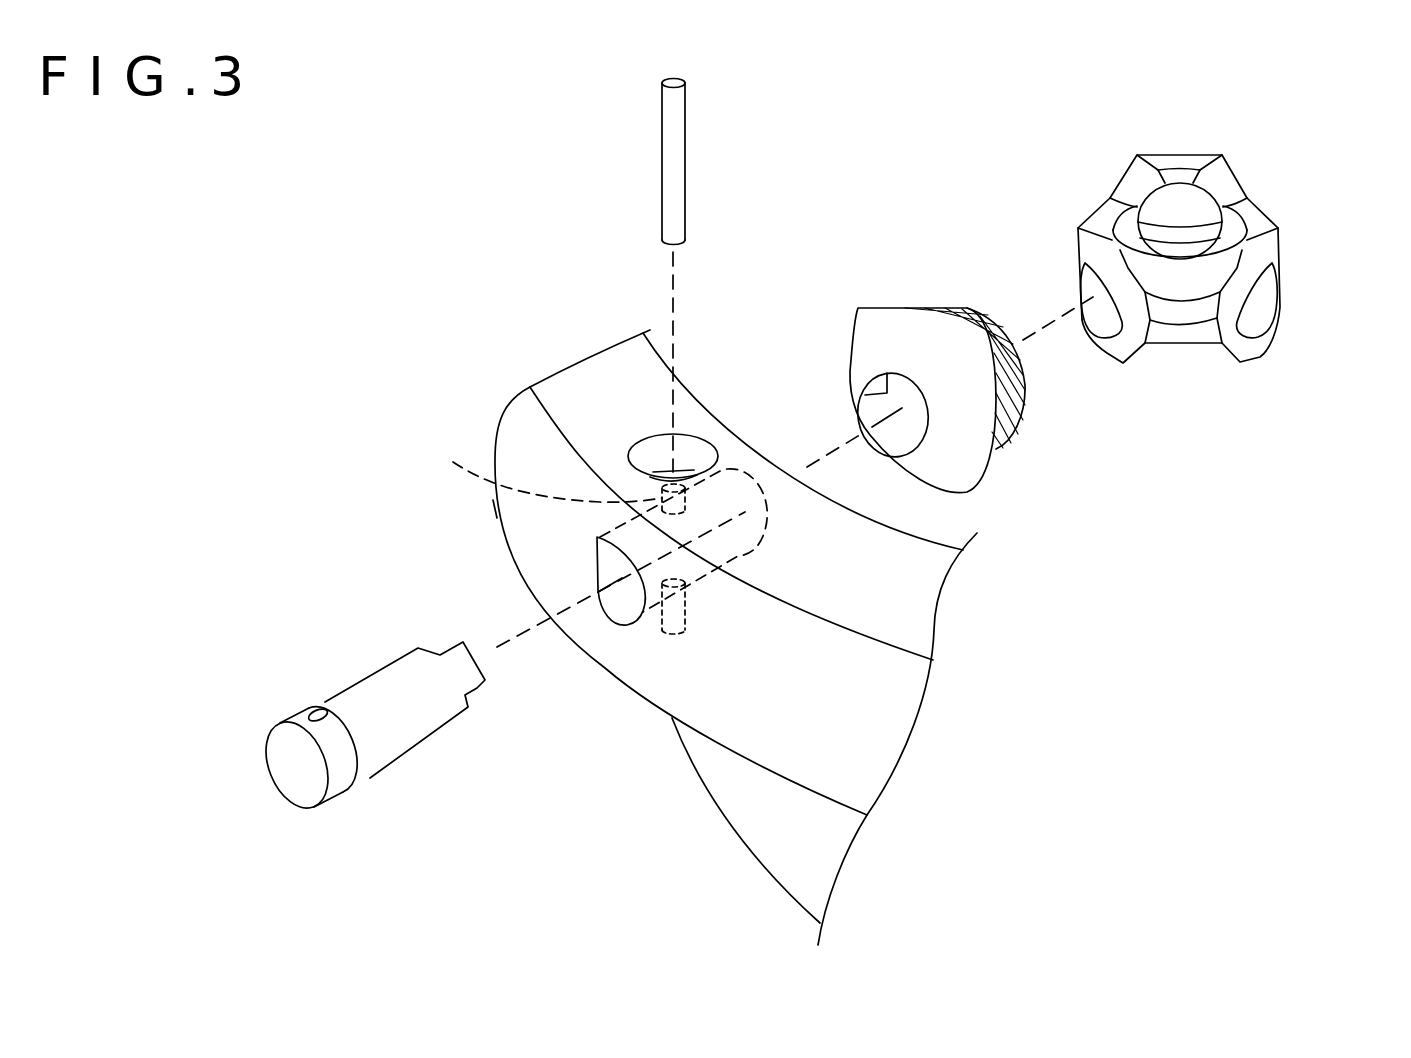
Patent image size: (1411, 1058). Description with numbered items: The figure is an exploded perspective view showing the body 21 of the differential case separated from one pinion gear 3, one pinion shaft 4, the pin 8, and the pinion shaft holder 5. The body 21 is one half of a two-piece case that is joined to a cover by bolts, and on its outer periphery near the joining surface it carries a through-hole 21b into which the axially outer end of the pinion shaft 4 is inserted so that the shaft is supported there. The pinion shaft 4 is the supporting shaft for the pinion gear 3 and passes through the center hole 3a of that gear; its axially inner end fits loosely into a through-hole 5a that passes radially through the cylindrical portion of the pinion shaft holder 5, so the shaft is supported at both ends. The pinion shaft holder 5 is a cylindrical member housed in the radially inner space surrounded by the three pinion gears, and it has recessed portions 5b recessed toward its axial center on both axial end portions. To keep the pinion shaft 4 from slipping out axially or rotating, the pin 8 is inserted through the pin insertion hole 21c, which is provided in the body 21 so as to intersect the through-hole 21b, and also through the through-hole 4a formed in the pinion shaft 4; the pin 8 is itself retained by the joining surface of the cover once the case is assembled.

The pinion gear 3 is at (940, 418).
The center hole 3a is at (860, 389).
The pinion shaft 4 is at (369, 736).
The through-hole 4a is at (318, 708).
The pinion shaft holder 5 is at (1199, 254).
The through-hole 5a is at (1180, 195).
The recessed portion 5b is at (1110, 217).
The pin 8 is at (668, 143).
The body 21 is at (918, 727).
The through-hole 21b is at (607, 625).
The pin insertion hole 21c is at (542, 467).